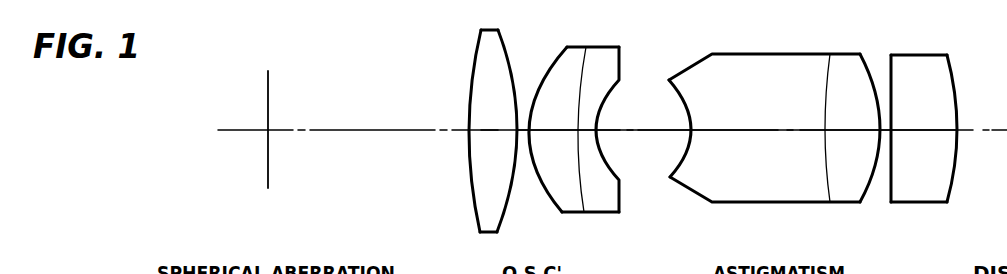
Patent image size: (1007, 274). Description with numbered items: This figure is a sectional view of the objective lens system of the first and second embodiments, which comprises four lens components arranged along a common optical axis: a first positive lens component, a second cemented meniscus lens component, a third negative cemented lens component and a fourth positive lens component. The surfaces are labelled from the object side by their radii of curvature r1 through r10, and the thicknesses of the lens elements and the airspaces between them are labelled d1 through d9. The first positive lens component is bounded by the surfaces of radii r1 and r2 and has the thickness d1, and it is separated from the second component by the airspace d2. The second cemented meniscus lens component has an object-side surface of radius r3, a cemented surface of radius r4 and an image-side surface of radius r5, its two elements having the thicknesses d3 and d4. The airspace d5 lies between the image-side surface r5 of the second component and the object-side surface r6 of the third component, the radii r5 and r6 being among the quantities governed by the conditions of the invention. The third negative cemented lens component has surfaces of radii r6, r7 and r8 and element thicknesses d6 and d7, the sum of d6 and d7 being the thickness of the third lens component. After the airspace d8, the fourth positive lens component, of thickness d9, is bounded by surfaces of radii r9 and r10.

The thickness of the first lens component d1 is at (487, 130).
The airspace between the first and second lens components d2 is at (523, 130).
The thickness of the first element of the second lens component d3 is at (553, 130).
The thickness of the second element of the second lens component d4 is at (593, 130).
The airspace between the second and third lens components d5 is at (648, 130).
The thickness of the first element of the third lens component d6 is at (737, 130).
The thickness of the second element of the third lens component d7 is at (848, 130).
The airspace between the third and fourth lens components d8 is at (885, 130).
The thickness of the fourth lens component d9 is at (923, 130).
The radius of curvature of the first surface r1 is at (473, 210).
The radius of curvature of the second surface r2 is at (505, 209).
The radius of curvature of the third surface r3 is at (553, 197).
The radius of curvature of the fourth surface r4 is at (584, 200).
The radius of curvature of the fifth surface r5 is at (618, 168).
The radius of curvature of the sixth surface r6 is at (673, 172).
The radius of curvature of the seventh surface r7 is at (829, 190).
The radius of curvature of the eighth surface r8 is at (866, 193).
The radius of curvature of the ninth surface r9 is at (891, 193).
The radius of curvature of the tenth surface r10 is at (954, 191).